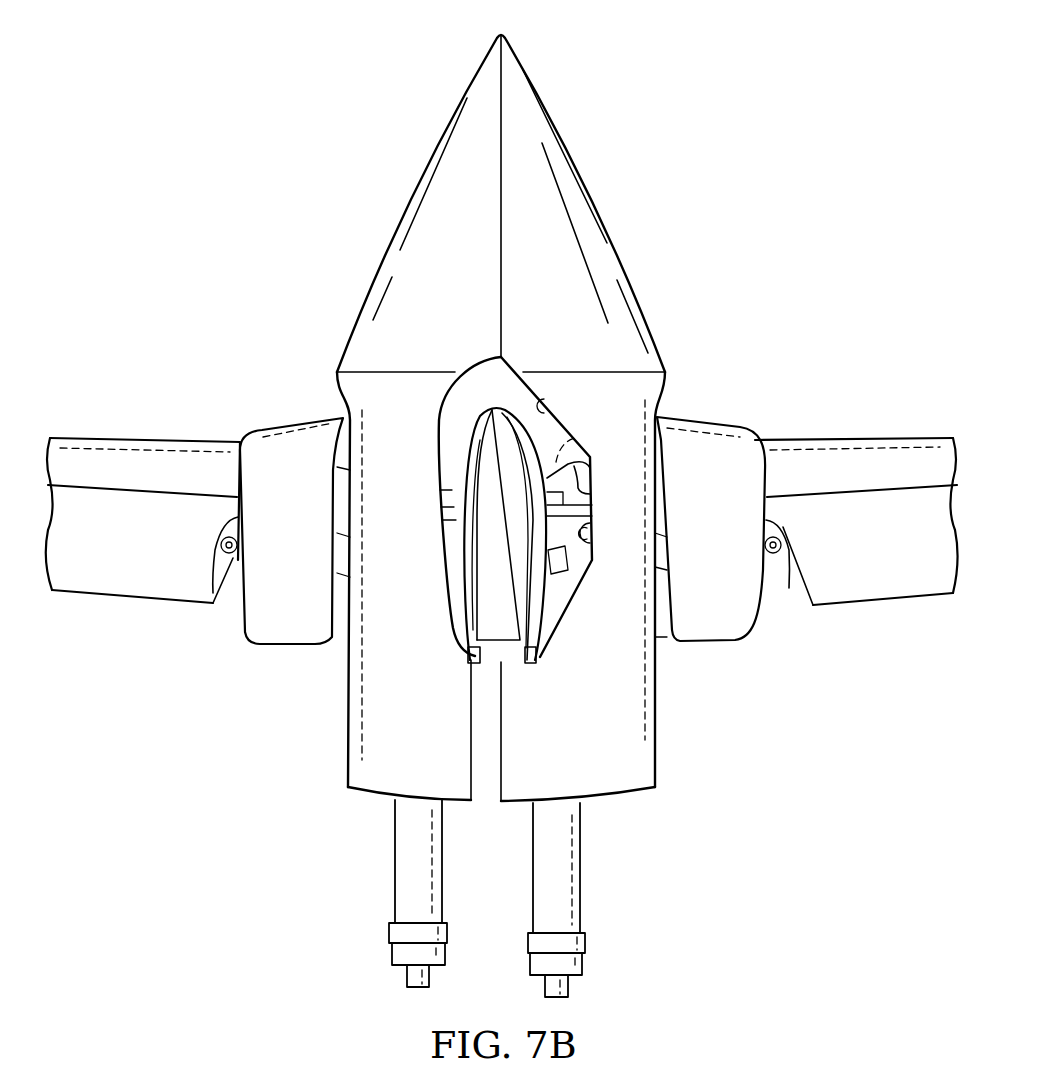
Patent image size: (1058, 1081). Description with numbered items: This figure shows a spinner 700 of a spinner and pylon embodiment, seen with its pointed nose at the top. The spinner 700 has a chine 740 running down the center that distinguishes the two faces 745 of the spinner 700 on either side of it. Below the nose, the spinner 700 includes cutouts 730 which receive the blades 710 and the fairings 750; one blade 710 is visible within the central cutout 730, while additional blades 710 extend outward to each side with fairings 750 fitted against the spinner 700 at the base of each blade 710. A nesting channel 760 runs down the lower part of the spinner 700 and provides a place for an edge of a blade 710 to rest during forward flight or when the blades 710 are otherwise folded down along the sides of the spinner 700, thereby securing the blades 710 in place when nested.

The spinner 700 is at (396, 121).
The blades 710 is at (135, 438).
The cutouts 730 is at (548, 406).
The chine 740 is at (500, 258).
The faces 745 is at (392, 265).
The fairings 750 is at (297, 422).
The nesting channels 760 is at (487, 730).